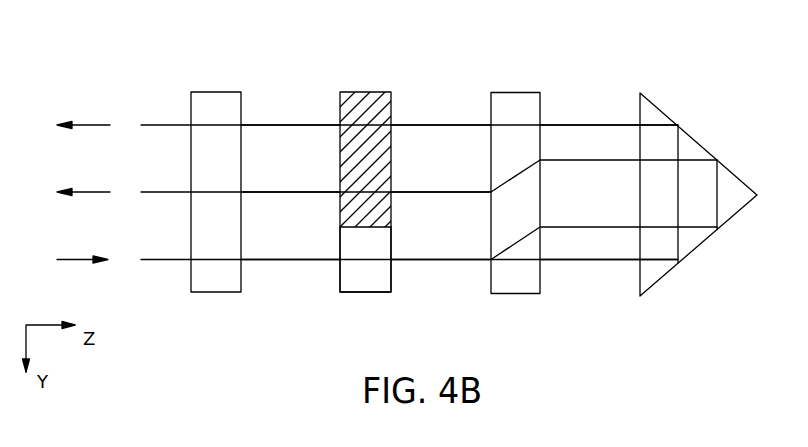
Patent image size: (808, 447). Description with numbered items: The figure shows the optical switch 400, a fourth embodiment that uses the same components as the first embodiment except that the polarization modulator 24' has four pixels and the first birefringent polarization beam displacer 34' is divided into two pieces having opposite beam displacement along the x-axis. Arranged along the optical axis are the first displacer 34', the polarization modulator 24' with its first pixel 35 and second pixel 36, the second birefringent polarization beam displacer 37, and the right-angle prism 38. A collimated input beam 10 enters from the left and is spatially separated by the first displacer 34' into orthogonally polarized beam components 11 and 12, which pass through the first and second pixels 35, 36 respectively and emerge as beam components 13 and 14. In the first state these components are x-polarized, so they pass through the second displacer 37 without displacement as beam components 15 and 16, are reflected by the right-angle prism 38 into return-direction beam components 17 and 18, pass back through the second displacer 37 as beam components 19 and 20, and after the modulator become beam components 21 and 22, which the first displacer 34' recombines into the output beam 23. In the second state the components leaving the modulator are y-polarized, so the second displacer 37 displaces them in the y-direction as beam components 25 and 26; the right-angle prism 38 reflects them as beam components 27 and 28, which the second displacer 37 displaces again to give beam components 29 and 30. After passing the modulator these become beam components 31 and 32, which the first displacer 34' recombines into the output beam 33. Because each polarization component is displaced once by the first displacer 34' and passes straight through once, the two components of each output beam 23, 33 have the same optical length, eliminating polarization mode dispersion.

The optical switch 400 is at (162, 28).
The input beam 10 is at (346, 260).
The beam component 11 is at (290, 300).
The beam component 12 is at (263, 262).
The beam component 13 is at (441, 300).
The beam component 14 is at (441, 262).
The beam component 15 is at (609, 301).
The beam component 16 is at (597, 262).
The beam component 17 is at (609, 98).
The beam component 18 is at (578, 124).
The beam component 19 is at (441, 97).
The beam component 20 is at (432, 125).
The beam component 21 is at (286, 86).
The beam component 22 is at (262, 124).
The output beam 23 is at (346, 126).
The polarization modulator 24' is at (341, 179).
The beam component 25 is at (628, 210).
The beam component 26 is at (554, 226).
The beam component 27 is at (628, 146).
The beam component 28 is at (554, 160).
The beam component 29 is at (441, 164).
The beam component 30 is at (433, 190).
The beam component 31 is at (290, 163).
The beam component 32 is at (287, 190).
The output beam 33 is at (253, 193).
The first birefringent polarization beam displacer 34' is at (216, 155).
The first pixel 35 is at (353, 277).
The second pixel 36 is at (340, 110).
The second birefringent polarization beam displacer 37 is at (517, 92).
The right-angle prism 38 is at (697, 143).